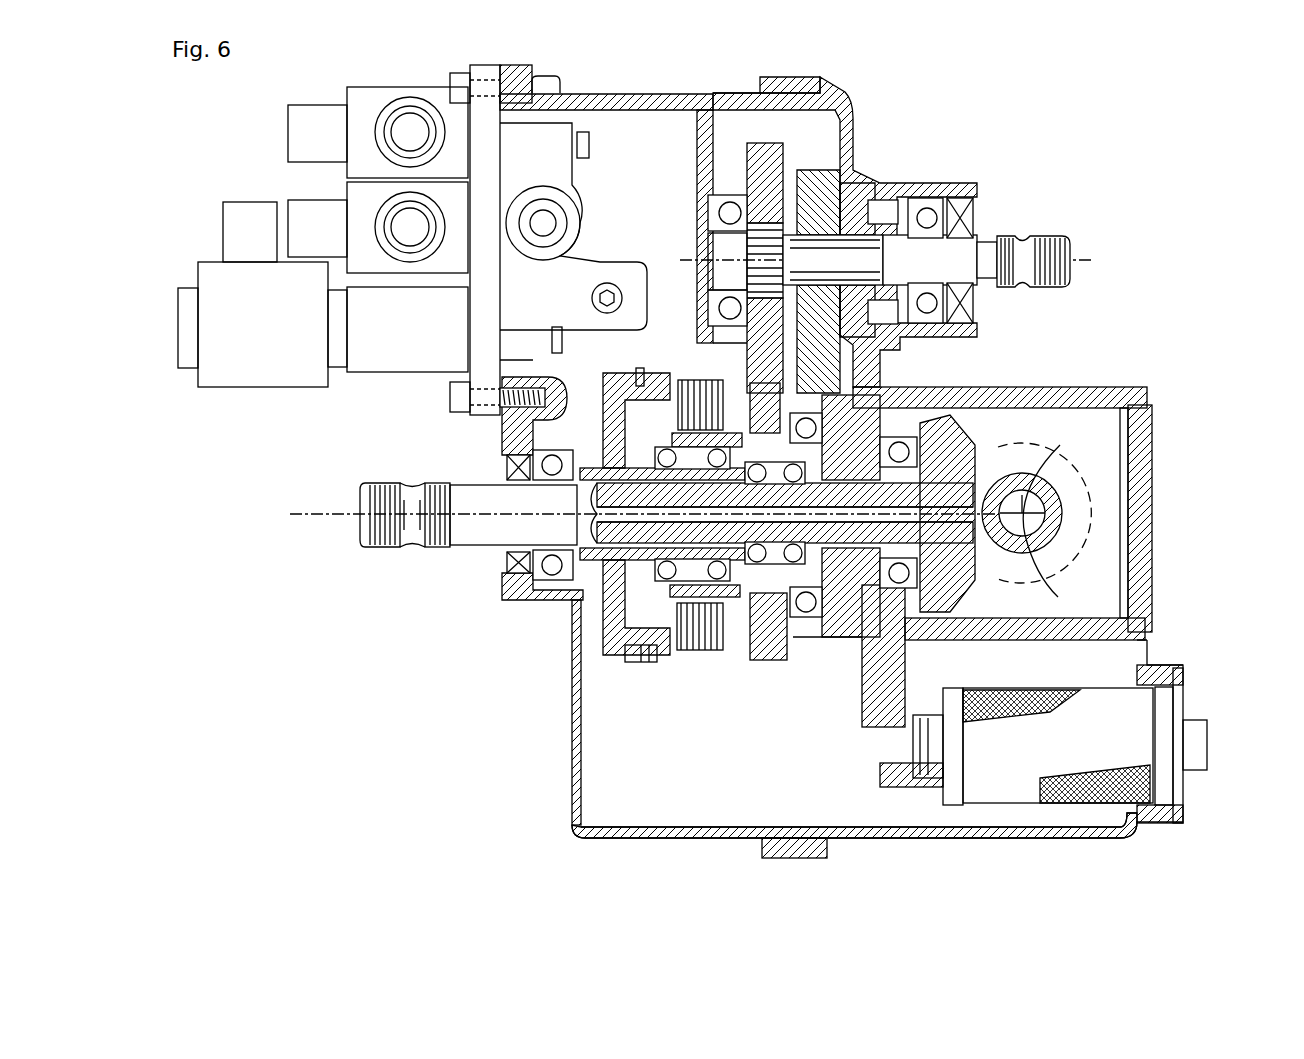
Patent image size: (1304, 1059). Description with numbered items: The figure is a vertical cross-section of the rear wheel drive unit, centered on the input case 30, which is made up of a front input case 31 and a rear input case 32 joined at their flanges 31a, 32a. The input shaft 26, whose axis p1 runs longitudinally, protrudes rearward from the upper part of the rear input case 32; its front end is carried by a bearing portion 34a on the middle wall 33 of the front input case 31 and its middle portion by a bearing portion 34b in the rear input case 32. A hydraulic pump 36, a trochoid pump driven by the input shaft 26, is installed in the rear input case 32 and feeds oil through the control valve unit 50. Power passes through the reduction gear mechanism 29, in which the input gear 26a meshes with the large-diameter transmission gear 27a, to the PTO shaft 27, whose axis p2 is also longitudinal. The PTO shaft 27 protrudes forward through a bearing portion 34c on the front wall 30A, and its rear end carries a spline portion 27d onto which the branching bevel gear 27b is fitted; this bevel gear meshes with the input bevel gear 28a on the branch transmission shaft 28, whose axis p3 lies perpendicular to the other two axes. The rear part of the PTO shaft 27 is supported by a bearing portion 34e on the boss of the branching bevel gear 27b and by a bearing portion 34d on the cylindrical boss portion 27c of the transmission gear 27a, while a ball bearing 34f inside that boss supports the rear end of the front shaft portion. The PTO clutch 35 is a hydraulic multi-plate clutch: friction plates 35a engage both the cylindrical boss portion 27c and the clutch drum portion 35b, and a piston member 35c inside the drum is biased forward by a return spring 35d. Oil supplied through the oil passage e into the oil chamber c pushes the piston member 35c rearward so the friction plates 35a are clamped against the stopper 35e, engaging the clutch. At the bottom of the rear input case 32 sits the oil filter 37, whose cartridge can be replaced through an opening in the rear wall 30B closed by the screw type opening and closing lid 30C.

The control valve unit 50 is at (347, 97).
The flange 31a is at (762, 82).
The flange 32a is at (822, 86).
The rear input case 32 is at (826, 427).
The input case 30 is at (852, 463).
The input gear 26a is at (777, 148).
The hydraulic pump 36 is at (884, 198).
The input shaft 26 is at (1045, 237).
The axis of the input shaft p1 is at (1070, 260).
The middle wall 33 is at (697, 190).
The bearing portion 34a is at (710, 220).
The reduction gear mechanism 29 is at (738, 356).
The friction plates 35a is at (688, 378).
The piston member 35c is at (605, 405).
The bearing portion 34b is at (927, 312).
The cylindrical boss portion 27c is at (866, 405).
The branching bevel gear 27b is at (965, 435).
The branch transmission shaft 28 is at (1060, 448).
The input bevel gear 28a is at (1095, 455).
The PTO shaft 27 is at (771, 551).
The axis of the PTO shaft p2 is at (360, 515).
The oil passage e is at (622, 500).
The bearing portion 34c is at (548, 462).
The return spring 35d is at (590, 606).
The oil chamber c is at (618, 616).
The clutch drum portion 35b is at (622, 663).
The stopper 35e is at (727, 650).
The ball bearing 34f is at (745, 600).
The transmission gear 27a is at (777, 662).
The bearing portion 34d is at (806, 614).
The bearing portion 34e is at (905, 588).
The oil filter 37 is at (1052, 690).
The rear wall 30B is at (1147, 655).
The opening and closing lid 30C is at (1185, 815).
The front wall 30A is at (572, 800).
The front input case 31 is at (809, 617).
The PTO clutch 35 is at (641, 558).
The spline portion 27d is at (976, 517).
The axis of the branch transmission shaft p3 is at (1030, 560).